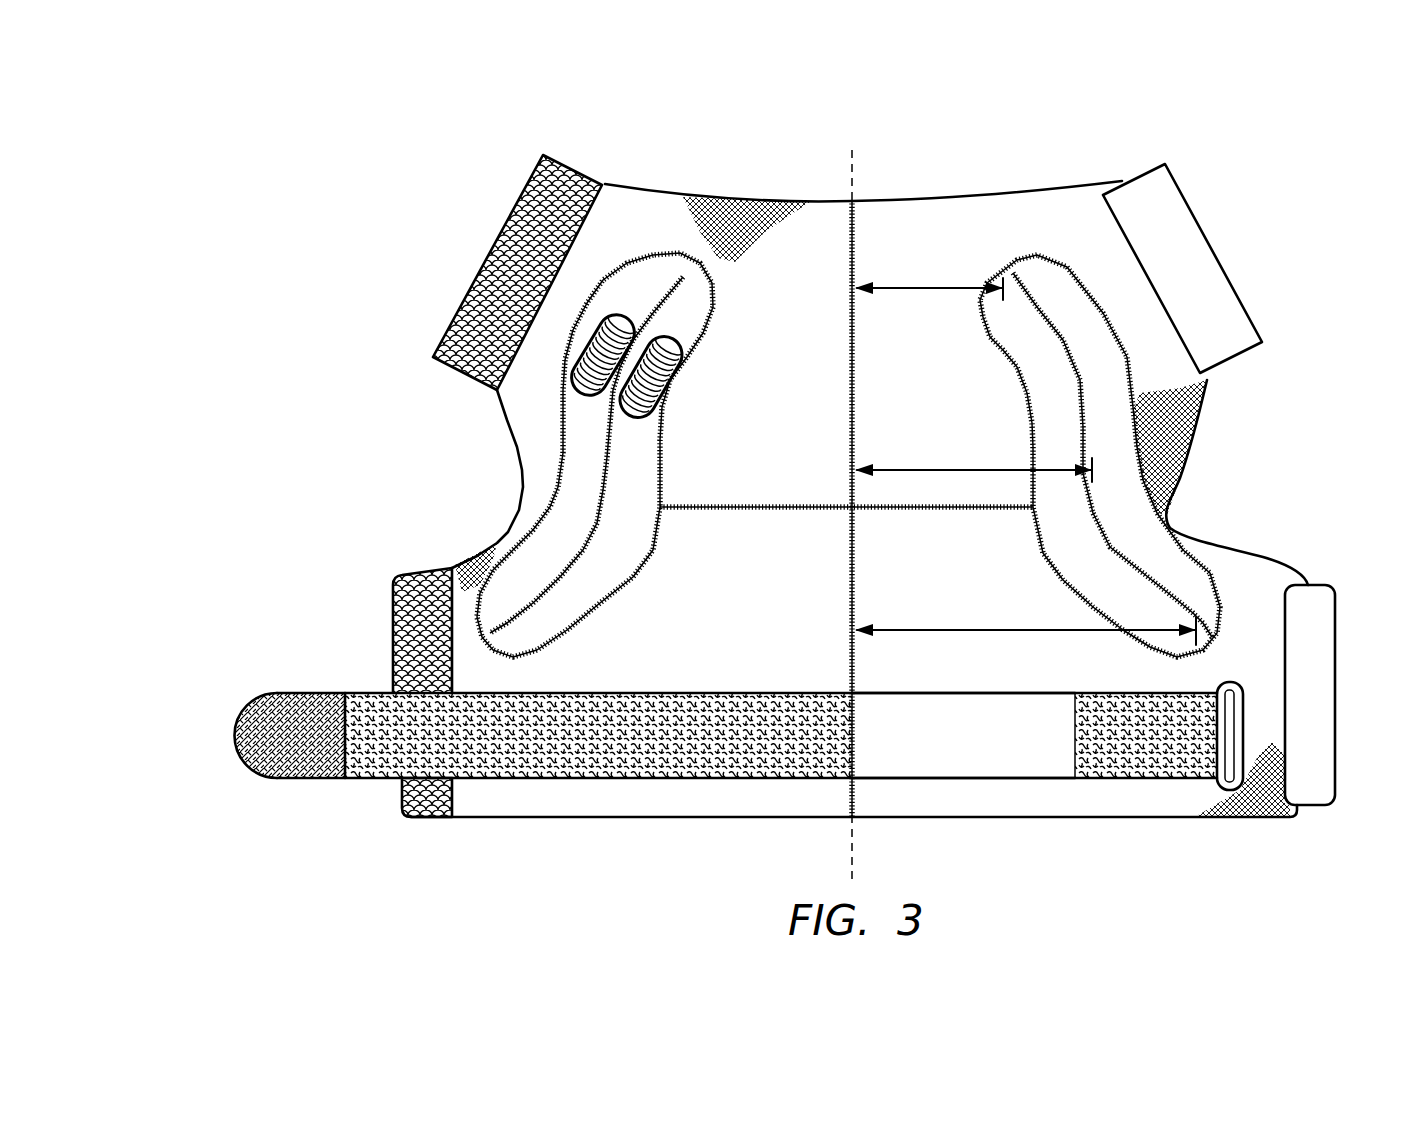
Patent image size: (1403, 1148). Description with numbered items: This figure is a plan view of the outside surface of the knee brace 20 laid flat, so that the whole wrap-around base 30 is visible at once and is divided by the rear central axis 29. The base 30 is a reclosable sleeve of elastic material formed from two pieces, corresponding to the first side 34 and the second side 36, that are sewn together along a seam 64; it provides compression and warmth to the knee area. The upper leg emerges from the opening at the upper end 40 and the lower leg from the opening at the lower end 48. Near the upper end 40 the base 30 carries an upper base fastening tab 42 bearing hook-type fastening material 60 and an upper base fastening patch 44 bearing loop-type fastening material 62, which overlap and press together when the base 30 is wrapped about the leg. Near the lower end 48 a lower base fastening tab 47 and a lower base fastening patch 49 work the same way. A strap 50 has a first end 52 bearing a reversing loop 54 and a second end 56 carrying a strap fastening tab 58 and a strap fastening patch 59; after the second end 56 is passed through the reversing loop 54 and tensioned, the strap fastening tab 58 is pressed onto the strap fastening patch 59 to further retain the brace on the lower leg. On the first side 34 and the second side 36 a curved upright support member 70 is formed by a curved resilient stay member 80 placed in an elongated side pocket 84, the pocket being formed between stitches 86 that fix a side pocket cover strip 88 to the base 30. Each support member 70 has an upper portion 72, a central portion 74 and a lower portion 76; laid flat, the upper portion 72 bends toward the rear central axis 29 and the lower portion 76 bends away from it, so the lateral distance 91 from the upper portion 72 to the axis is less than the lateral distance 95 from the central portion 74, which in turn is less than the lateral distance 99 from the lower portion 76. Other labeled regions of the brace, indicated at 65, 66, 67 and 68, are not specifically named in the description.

The knee brace 20 is at (322, 200).
The rear central axis 29 is at (857, 155).
The base 30 is at (893, 213).
The first side 34 is at (977, 237).
The second side 36 is at (662, 213).
The upper end 40 is at (733, 217).
The upper base fastening tab 42 is at (1210, 245).
The upper base fastening patch 44 is at (497, 253).
The lower base fastening tab 47 is at (1315, 640).
The lower end 48 is at (1078, 807).
The lower base fastening patch 49 is at (403, 653).
The strap 50 is at (510, 757).
The first end 52 is at (1177, 763).
The reversing loop 54 is at (1232, 787).
The second end 56 is at (257, 712).
The strap fastening tab 58 is at (270, 770).
The strap fastening patch 59 is at (377, 750).
The hook-type fastening material 60 is at (310, 757).
The loop-type fastening material 62 is at (503, 213).
The seam 64 is at (850, 600).
The upper edge 65 is at (908, 243).
The strap gap 66 is at (967, 670).
The center portion 67 is at (798, 273).
The lower portion 68 is at (785, 673).
The curved upright support member 70 is at (580, 452).
The upper portion 72 is at (653, 275).
The central portion 74 is at (588, 497).
The lower portion 76 is at (523, 571).
The resilient stay member 80 is at (615, 408).
The elongated side pocket 84 is at (593, 380).
The stitches 86 is at (607, 603).
The side pocket cover strip 88 is at (503, 618).
The lateral distance 91 is at (945, 287).
The lateral distance 95 is at (963, 470).
The lateral distance 99 is at (975, 630).